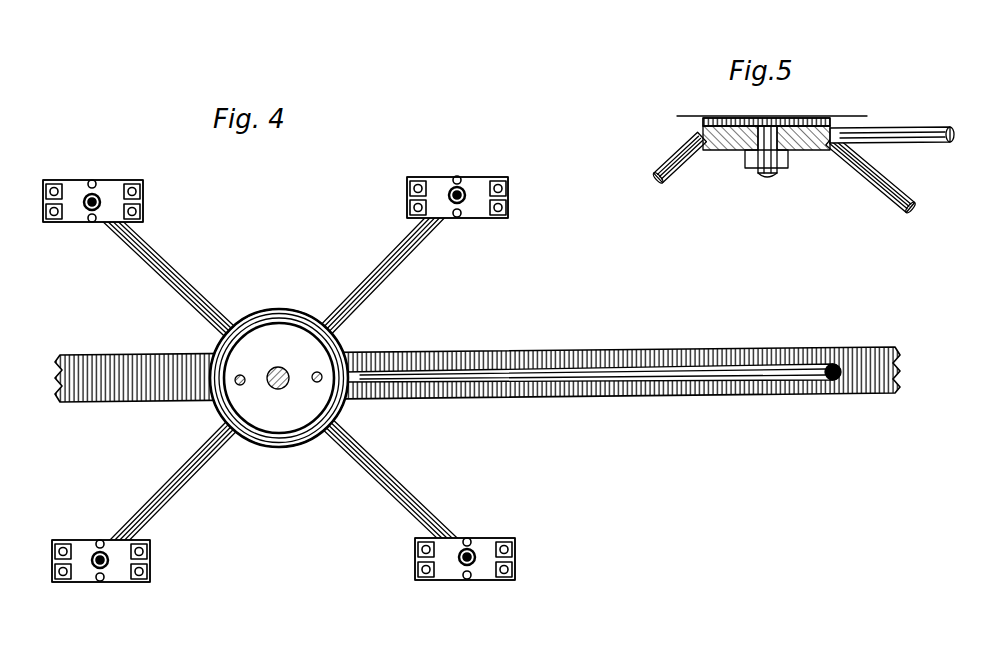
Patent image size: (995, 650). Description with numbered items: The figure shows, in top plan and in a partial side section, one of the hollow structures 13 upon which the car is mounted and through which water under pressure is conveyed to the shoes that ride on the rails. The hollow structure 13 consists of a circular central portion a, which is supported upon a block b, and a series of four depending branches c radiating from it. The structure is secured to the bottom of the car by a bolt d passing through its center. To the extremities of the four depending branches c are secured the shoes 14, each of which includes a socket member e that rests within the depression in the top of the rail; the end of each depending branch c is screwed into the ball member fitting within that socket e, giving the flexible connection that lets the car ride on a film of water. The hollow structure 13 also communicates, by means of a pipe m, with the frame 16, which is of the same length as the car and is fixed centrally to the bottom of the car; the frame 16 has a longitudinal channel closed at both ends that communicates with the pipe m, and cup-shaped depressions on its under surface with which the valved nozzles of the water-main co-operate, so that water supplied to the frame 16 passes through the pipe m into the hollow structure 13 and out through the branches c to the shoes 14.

In FIG. 4, the hollow structure 13 is at (279, 394).
In FIG. 5, the hollow structure 13 is at (766, 110).
In FIG. 4, the shoes 14 is at (279, 379).
In FIG. 4, the frame 16 is at (477, 359).
In FIG. 4, the circular central portion a is at (340, 410).
In FIG. 5, the circular central portion a is at (700, 121).
In FIG. 4, the block b is at (278, 362).
In FIG. 5, the block b is at (812, 150).
In FIG. 4, the depending branches c is at (177, 273).
In FIG. 5, the depending branches c is at (662, 188).
In FIG. 4, the bolt d is at (286, 385).
In FIG. 5, the bolt d is at (770, 179).
In FIG. 4, the socket member e is at (70, 180).
In FIG. 4, the pipe m is at (586, 368).
In FIG. 5, the pipe m is at (892, 122).